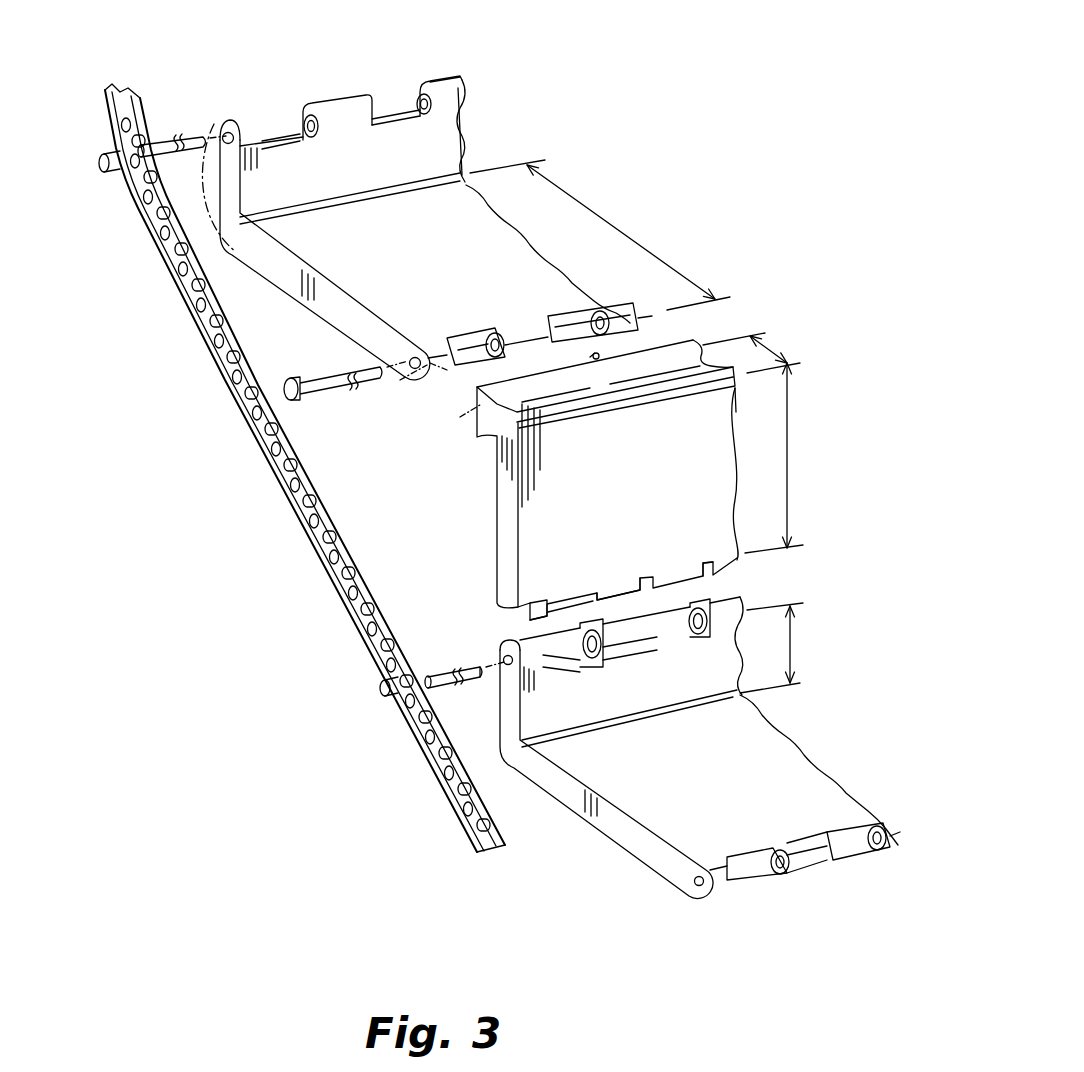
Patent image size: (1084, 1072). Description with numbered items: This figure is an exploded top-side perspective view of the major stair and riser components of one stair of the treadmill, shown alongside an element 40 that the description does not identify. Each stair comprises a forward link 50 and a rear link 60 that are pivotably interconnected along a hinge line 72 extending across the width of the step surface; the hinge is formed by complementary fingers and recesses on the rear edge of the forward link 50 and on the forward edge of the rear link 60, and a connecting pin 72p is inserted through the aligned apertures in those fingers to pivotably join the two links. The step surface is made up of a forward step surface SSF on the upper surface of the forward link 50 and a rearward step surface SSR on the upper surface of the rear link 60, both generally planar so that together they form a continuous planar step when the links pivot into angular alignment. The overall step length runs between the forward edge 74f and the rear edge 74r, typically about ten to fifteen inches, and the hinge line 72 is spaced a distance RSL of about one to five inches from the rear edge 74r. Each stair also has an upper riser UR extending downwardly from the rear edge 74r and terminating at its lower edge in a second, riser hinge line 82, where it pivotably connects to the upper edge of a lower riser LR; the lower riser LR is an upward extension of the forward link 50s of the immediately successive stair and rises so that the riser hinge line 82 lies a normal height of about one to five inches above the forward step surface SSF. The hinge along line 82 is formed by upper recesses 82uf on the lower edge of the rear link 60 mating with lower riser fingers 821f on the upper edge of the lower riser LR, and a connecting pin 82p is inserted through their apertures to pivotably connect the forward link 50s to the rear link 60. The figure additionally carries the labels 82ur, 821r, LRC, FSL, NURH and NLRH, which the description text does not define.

The chain 40 is at (352, 630).
The forward link 50 is at (395, 257).
The forward link of immediately successive stair 50s is at (659, 750).
The rear link 60 is at (580, 482).
The hinge line 72 is at (530, 314).
The connecting pin 72p is at (328, 378).
The forward edge 74f is at (437, 183).
The rear edge 74r is at (693, 387).
The riser hinge line 82 is at (490, 673).
The connecting pin 82p is at (443, 670).
The upper rear clip 82ur is at (617, 598).
The upper recesses 82uf is at (570, 598).
The lower rear clip 821r is at (394, 112).
The lower riser fingers 821f is at (432, 78).
The lower riser LR is at (376, 173).
The link rotation center LRC is at (201, 196).
The forward step surface SSF is at (463, 270).
The rearward step surface SSR is at (617, 392).
The upper riser UR is at (648, 513).
The front surface length FSL is at (638, 227).
The distance from hinge line to rear edge RSL is at (774, 343).
The upper rail height NURH is at (789, 450).
The lower rail height NLRH is at (790, 638).